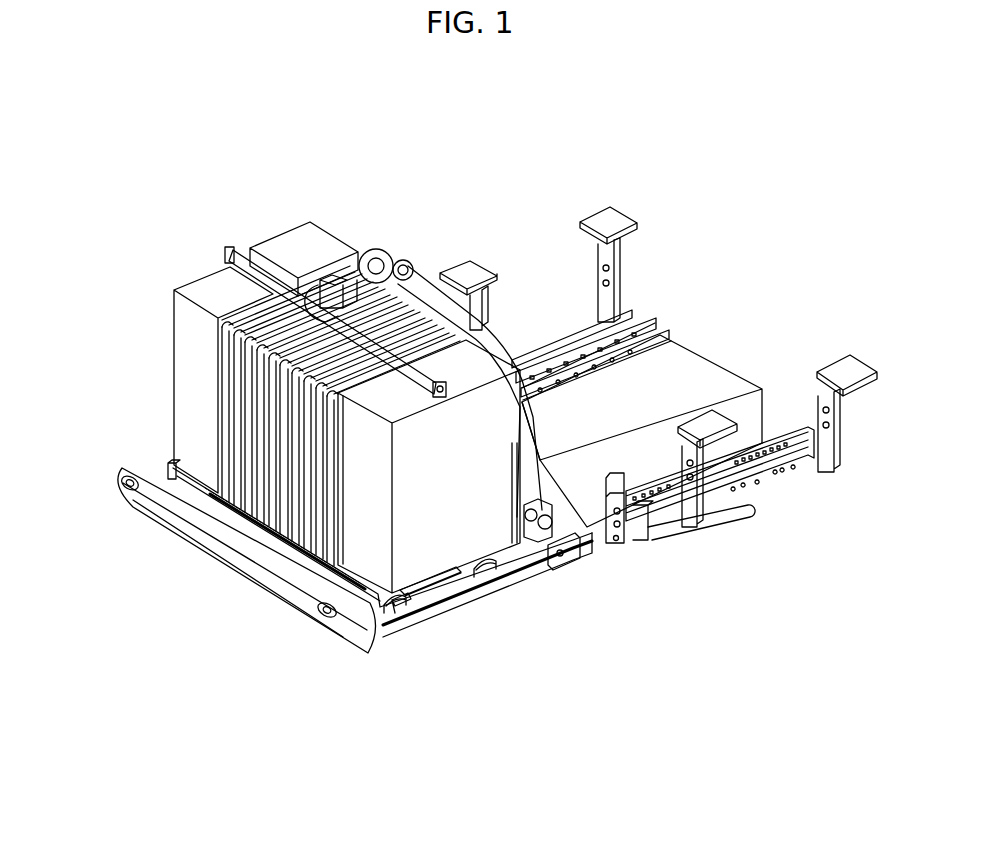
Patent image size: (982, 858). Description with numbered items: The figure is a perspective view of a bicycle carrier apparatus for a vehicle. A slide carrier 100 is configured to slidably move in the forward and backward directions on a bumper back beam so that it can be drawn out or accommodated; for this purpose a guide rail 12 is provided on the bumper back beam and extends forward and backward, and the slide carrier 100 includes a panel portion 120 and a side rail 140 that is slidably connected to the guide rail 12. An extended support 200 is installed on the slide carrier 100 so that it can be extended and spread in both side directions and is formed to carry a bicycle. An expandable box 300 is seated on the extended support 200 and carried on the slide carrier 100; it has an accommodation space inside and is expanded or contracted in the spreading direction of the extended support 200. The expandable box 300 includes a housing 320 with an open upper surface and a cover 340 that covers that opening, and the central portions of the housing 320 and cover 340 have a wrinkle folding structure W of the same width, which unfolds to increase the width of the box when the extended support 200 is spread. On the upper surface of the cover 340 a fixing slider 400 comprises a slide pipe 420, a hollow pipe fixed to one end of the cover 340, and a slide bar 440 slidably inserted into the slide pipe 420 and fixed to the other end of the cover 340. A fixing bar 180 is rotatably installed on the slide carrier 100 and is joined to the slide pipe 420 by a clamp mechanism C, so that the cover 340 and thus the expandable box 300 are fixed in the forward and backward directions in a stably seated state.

The slide carrier 100 is at (550, 570).
The panel portion 120 is at (270, 577).
The extended support 200 is at (170, 472).
The side rail 140 is at (516, 568).
The fixing bar 180 is at (425, 276).
The clamp mechanism C is at (381, 249).
The guide rail 12 is at (797, 463).
The expandable box 300 is at (287, 372).
The housing 320 is at (190, 378).
The wrinkle folding structure W is at (267, 457).
The cover 340 is at (306, 238).
The fixing slider 400 is at (250, 322).
The slide pipe 420 is at (256, 270).
The slide bar 440 is at (272, 357).